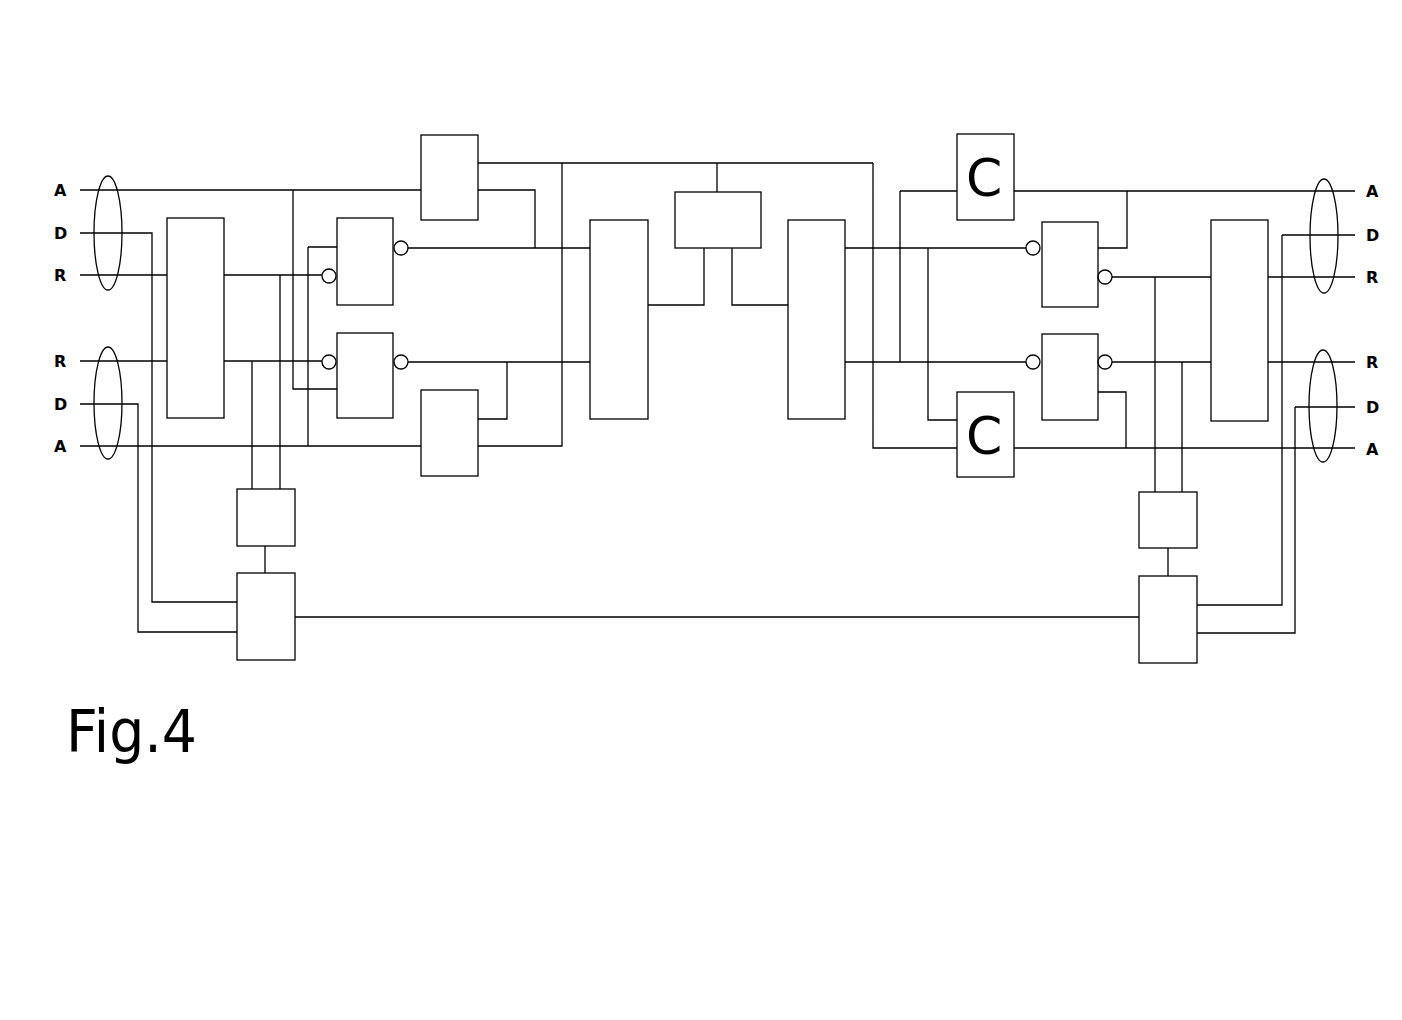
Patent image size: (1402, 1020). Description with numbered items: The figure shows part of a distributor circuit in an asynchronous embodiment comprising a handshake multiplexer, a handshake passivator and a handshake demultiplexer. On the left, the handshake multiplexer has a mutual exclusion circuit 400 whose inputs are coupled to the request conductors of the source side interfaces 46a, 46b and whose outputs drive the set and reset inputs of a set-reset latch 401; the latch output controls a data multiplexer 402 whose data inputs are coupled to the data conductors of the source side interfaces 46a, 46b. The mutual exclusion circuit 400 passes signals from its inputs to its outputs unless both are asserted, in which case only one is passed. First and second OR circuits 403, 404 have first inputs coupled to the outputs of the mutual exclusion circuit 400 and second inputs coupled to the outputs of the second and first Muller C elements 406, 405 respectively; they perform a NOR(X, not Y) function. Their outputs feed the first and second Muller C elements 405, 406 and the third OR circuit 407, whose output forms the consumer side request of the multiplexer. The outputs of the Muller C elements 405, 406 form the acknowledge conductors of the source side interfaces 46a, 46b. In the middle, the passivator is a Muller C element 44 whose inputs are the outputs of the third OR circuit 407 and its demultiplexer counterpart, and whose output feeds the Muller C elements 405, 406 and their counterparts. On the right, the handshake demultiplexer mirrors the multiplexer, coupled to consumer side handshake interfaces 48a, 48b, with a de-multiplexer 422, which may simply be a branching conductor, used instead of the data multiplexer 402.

The Muller C element 44 is at (742, 192).
The source side interface 46a is at (108, 177).
The source side interface 46b is at (108, 459).
The consumer side handshake interface 48a is at (1324, 179).
The consumer side handshake interface 48b is at (1323, 462).
The mutual exclusion circuit 400 is at (195, 218).
The set-reset latch 401 is at (295, 530).
The data multiplexer 402 is at (295, 586).
The first OR circuit 403 is at (365, 218).
The second OR circuit 404 is at (393, 342).
The first Muller C element 405 is at (453, 135).
The second Muller C element 406 is at (450, 477).
The third OR circuit 407 is at (622, 420).
The de-multiplexer 422 is at (1139, 586).